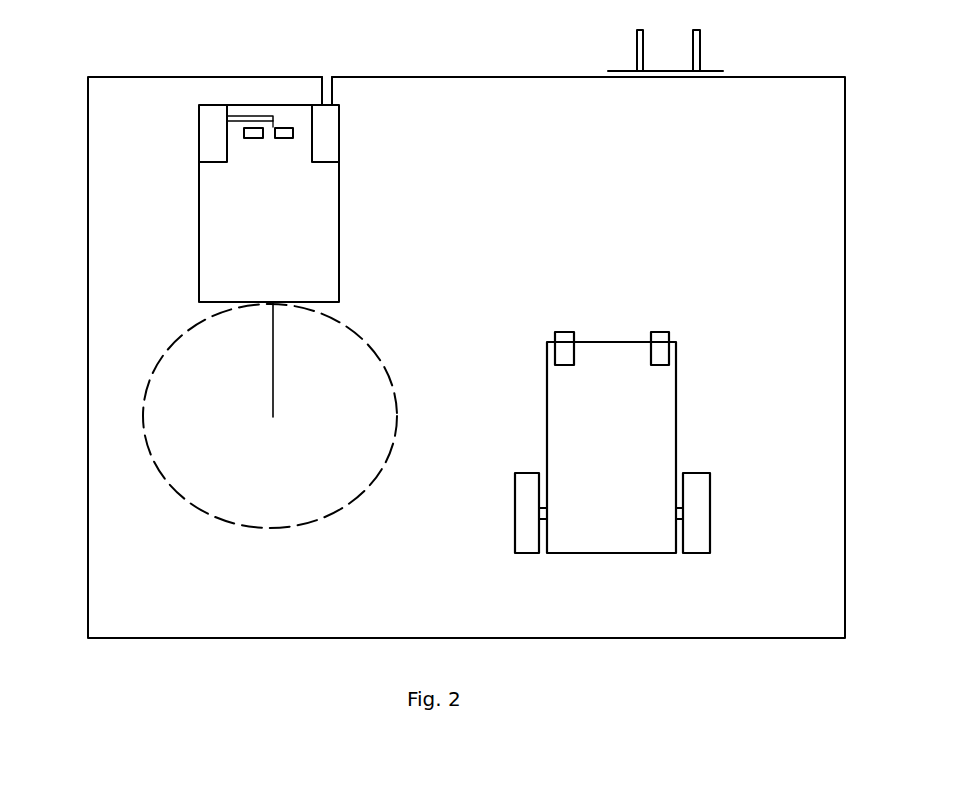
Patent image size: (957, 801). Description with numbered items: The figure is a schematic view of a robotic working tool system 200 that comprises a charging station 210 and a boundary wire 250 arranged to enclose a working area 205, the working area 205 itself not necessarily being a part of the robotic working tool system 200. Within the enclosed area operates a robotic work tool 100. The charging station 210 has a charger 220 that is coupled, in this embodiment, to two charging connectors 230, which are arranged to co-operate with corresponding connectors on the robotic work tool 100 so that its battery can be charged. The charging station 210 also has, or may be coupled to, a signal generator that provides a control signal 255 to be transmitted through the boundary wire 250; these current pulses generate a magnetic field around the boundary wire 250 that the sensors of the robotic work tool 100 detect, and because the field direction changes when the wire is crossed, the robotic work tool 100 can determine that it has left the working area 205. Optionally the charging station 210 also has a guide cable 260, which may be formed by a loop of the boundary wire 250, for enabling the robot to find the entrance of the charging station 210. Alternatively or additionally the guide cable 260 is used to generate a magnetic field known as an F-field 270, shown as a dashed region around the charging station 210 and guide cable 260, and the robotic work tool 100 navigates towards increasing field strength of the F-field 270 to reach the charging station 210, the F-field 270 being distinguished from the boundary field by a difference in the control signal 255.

The robotic work tool 100 is at (678, 467).
The robotic working tool system 200 is at (213, 163).
The working area 205 is at (208, 603).
The charging station 210 is at (198, 163).
The charger 220 is at (210, 117).
The charging connectors 230 is at (282, 87).
The boundary wire 250 is at (525, 77).
The control signal 255 is at (700, 56).
The guide cable 260 is at (273, 397).
The F-field 270 is at (340, 510).